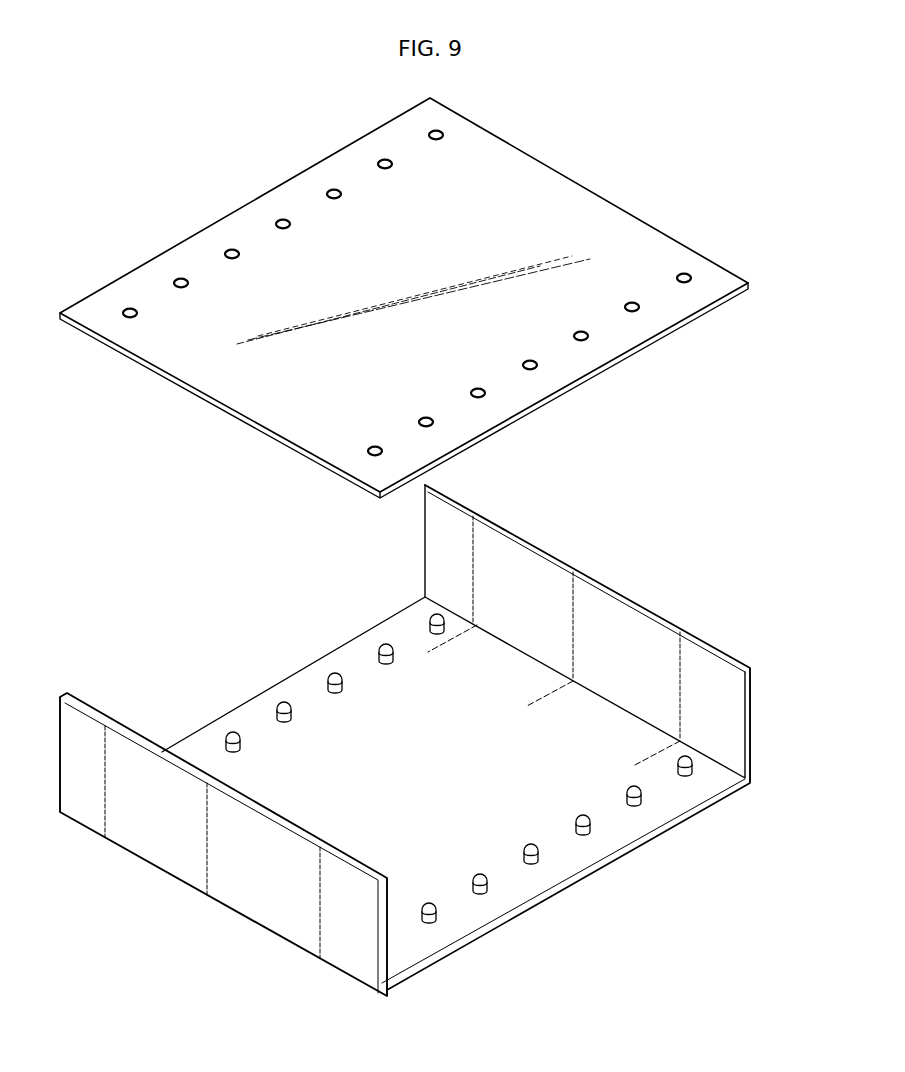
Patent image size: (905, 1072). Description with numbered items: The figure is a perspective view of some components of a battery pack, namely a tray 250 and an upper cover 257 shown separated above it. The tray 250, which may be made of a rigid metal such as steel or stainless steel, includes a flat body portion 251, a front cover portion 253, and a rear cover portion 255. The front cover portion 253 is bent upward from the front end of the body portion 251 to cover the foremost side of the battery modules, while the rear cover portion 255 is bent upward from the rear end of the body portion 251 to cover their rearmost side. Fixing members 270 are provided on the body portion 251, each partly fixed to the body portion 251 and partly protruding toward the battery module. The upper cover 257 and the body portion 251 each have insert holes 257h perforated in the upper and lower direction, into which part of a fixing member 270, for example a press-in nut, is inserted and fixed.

The tray 250 is at (447, 1036).
The body portion 251 is at (587, 877).
The front cover portion 253 is at (382, 942).
The rear cover portion 255 is at (755, 736).
The upper cover 257 is at (597, 196).
The insert hole 257h is at (541, 369).
The fixing member 270 is at (525, 838).